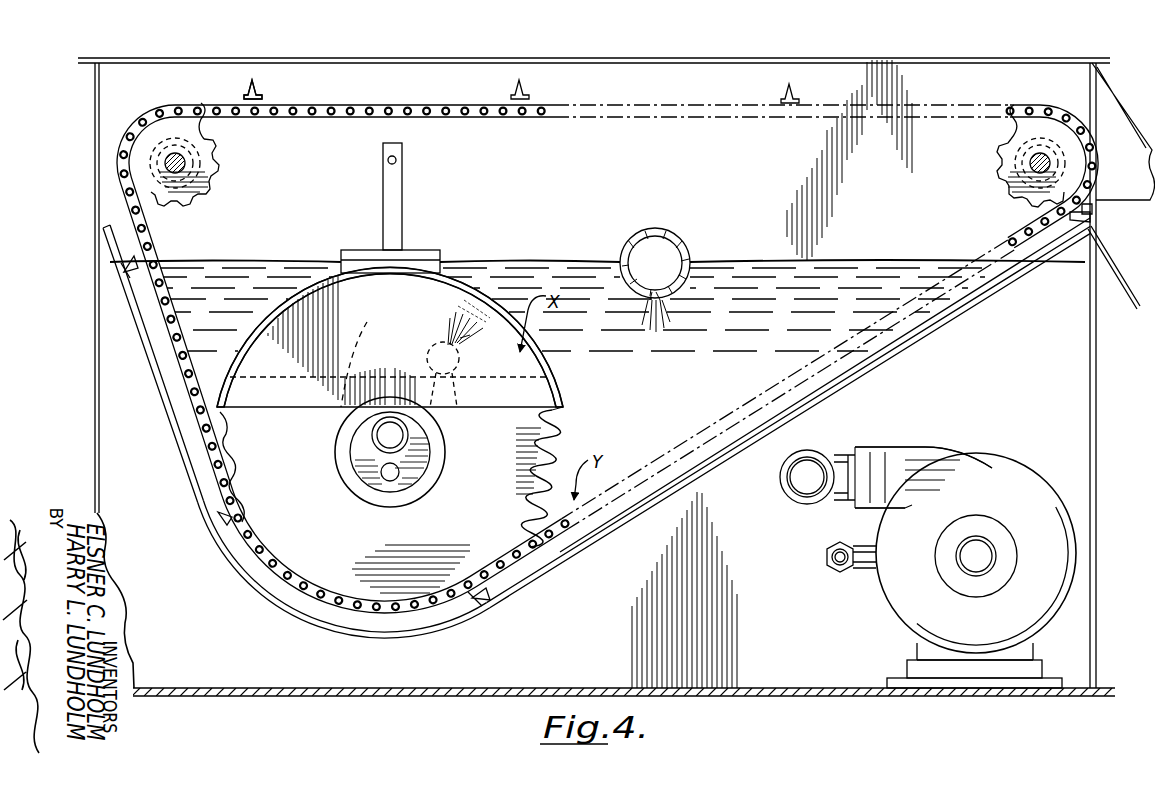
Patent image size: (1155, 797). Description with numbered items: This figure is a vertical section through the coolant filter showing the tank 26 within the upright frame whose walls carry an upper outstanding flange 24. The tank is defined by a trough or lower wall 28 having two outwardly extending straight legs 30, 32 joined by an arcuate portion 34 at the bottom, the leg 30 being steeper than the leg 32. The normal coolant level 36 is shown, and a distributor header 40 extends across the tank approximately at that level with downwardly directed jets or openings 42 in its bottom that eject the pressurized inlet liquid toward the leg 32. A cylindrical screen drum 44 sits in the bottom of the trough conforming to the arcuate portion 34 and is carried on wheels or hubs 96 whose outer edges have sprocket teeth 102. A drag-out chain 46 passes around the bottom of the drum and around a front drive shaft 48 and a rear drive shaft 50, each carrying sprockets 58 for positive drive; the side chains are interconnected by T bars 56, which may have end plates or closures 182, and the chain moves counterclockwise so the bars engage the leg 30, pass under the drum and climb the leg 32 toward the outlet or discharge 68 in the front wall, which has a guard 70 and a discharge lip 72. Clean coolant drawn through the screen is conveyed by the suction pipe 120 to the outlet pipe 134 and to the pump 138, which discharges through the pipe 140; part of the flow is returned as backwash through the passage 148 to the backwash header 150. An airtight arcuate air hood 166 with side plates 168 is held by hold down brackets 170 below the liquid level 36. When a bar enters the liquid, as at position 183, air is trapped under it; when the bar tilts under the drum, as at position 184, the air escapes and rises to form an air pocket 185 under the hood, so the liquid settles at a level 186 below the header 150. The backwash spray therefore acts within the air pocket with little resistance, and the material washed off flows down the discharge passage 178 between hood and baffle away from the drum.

The upper outstanding flange 24 is at (678, 40).
The tank 26 is at (487, 135).
The trough or lower wall 28 is at (638, 530).
The leg 30 is at (168, 383).
The leg 32 is at (862, 372).
The arcuate portion 34 is at (384, 635).
The normal fluid or coolant level 36 is at (538, 238).
The distributor header 40 is at (678, 240).
The jets or openings 42 is at (650, 296).
The screen drum 44 is at (296, 540).
The drag-out chain 46 is at (360, 118).
The drive shaft 48 is at (1030, 162).
The drive shaft 50 is at (187, 160).
The T bars 56 is at (258, 92).
The sprockets 58 is at (220, 152).
The outlet or discharge 68 is at (1098, 211).
The guard 70 is at (1114, 96).
The discharge lip 72 is at (1114, 276).
The wheels or hubs 96 is at (302, 560).
The sprocket teeth 102 is at (228, 418).
The suction or discharge pipe 120 is at (410, 440).
The outlet pipe 134 is at (968, 560).
The pump 138 is at (1050, 436).
The pipe 140 is at (800, 488).
The passage 148 is at (396, 478).
The backwash header 150 is at (468, 378).
The air hood 166 is at (308, 296).
The side plates 168 is at (280, 318).
The hold down brackets 170 is at (402, 205).
The discharge passage 178 is at (565, 418).
The end plates or closures 182 is at (250, 92).
The bar position 183 is at (128, 265).
The bar position 184 is at (496, 604).
The air pocket 185 is at (432, 302).
The liquid level under hood 186 is at (368, 324).